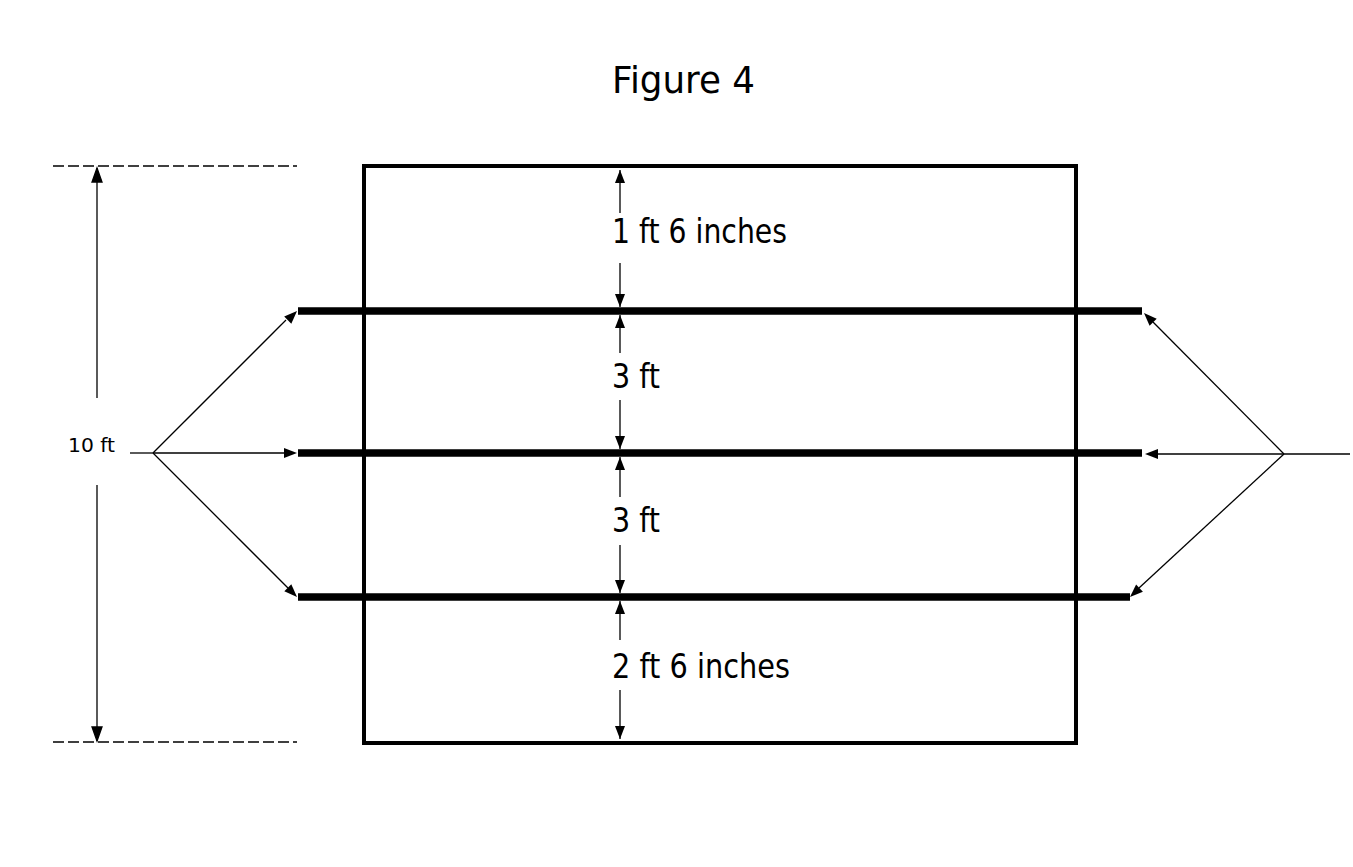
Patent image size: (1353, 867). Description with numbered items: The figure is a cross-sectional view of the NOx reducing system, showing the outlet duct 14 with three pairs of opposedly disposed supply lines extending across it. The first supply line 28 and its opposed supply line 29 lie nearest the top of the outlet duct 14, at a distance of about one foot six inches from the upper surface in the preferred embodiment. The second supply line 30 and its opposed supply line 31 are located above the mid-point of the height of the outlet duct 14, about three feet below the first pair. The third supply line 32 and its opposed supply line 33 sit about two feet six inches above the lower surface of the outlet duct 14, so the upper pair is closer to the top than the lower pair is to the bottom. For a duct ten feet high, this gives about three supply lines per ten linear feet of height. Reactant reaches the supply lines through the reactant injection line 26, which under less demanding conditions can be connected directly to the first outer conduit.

The outlet duct 14 is at (1077, 222).
The reactant injection line 26 is at (267, 452).
The first supply line 28 is at (923, 313).
The opposedly disposed supply line 29 is at (452, 313).
The second supply line 30 is at (1000, 457).
The opposedly disposed supply line 31 is at (436, 457).
The third supply line 32 is at (960, 602).
The opposedly disposed supply line 33 is at (436, 601).